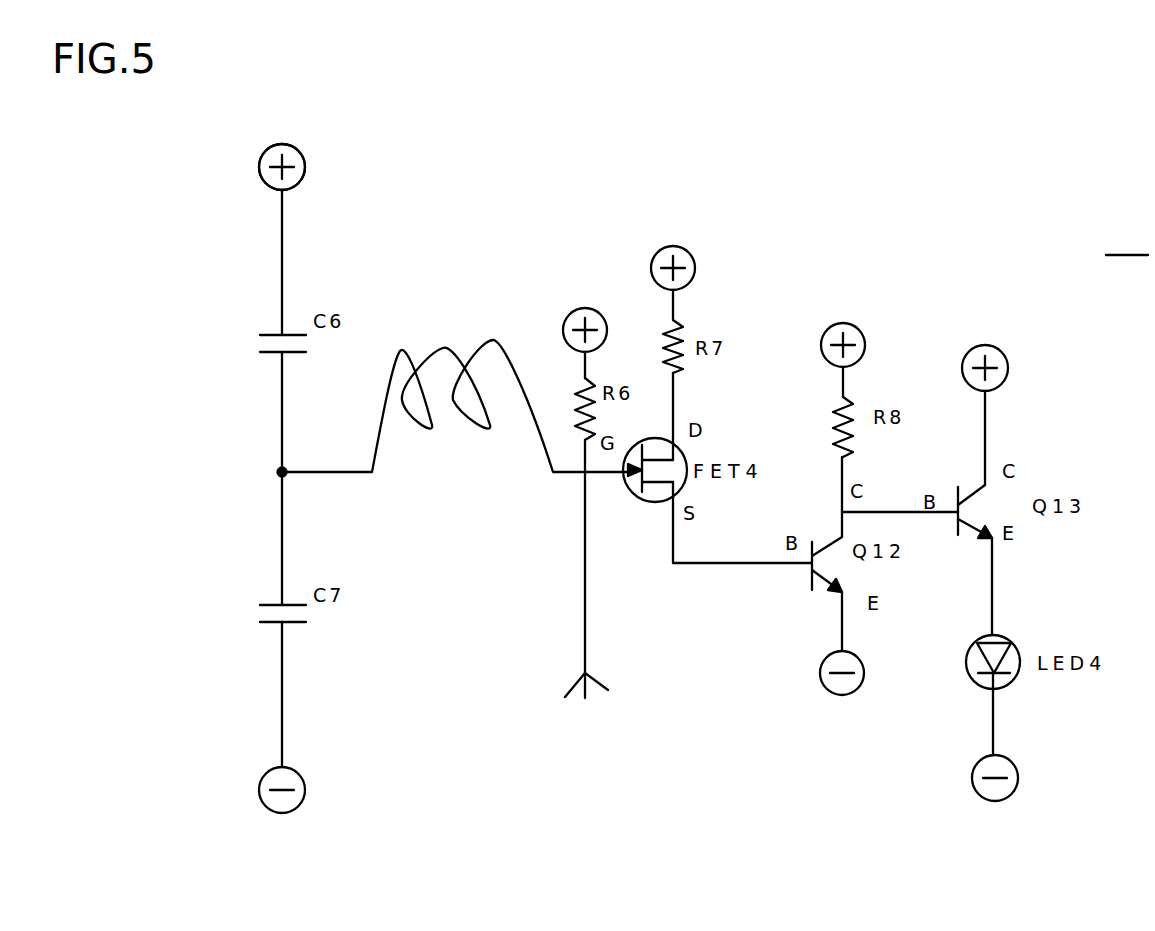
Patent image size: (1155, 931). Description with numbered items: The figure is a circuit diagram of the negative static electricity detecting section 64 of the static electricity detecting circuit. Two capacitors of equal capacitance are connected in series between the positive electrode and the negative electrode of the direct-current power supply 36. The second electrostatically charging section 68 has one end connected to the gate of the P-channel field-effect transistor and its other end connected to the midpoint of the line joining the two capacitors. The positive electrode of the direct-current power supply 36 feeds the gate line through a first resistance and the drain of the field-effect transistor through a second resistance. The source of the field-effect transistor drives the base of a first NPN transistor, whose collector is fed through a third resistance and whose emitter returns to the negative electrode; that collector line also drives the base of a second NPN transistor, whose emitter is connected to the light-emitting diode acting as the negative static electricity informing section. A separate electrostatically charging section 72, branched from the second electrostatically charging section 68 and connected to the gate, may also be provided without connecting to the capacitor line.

The direct-current power supply 36 is at (289, 148).
The negative static electricity detecting section 64 is at (1112, 310).
The second electrostatically charging section 68 is at (456, 381).
The electrostatically charging section 72 is at (608, 569).